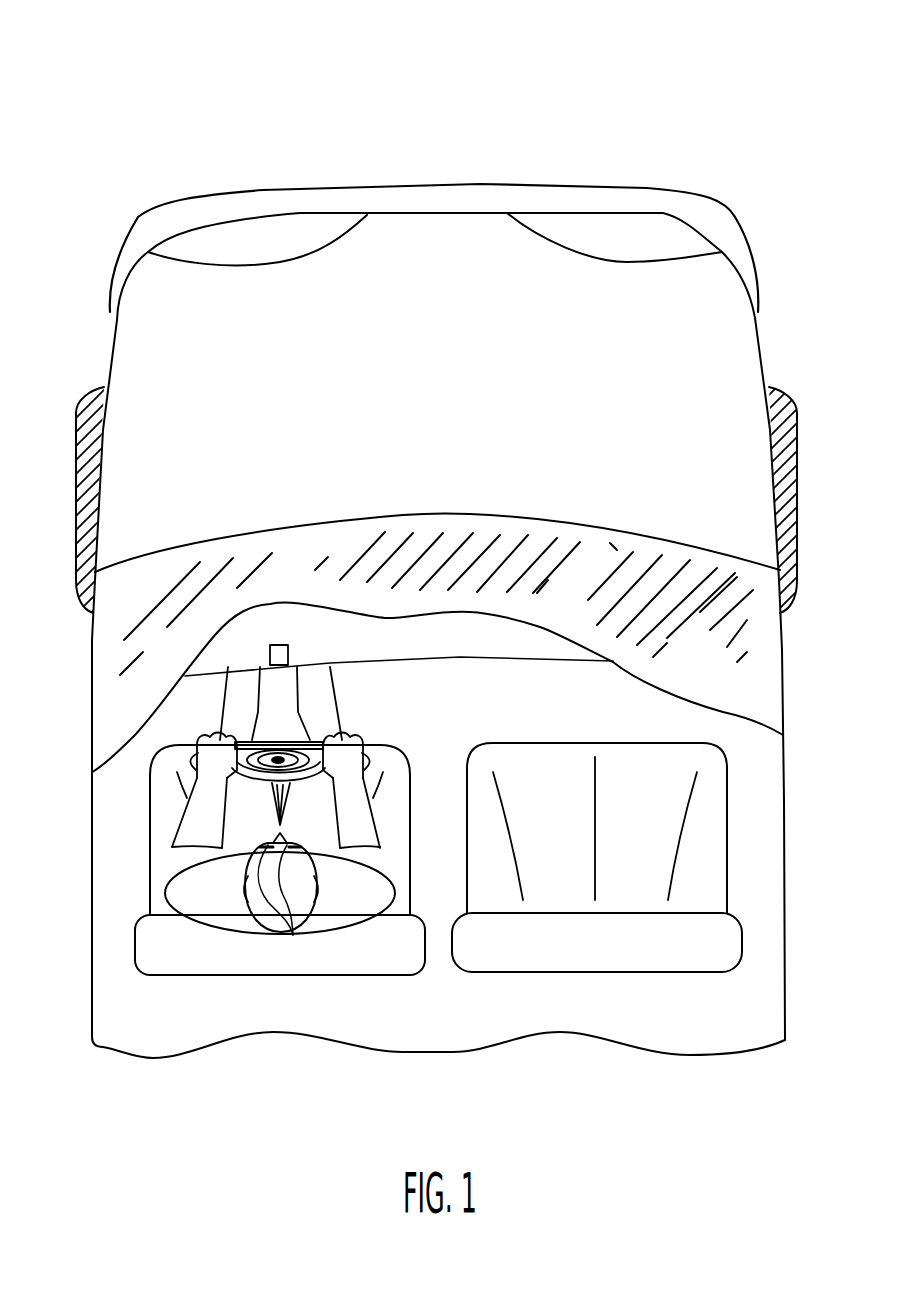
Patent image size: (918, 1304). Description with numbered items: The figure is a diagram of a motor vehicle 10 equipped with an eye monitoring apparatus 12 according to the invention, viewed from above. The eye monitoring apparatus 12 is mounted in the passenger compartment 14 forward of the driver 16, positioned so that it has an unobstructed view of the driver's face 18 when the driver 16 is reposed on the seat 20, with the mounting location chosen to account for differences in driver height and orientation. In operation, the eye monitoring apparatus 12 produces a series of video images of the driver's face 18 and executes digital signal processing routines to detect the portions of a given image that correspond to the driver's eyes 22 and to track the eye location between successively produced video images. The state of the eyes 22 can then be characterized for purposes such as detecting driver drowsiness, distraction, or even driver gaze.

The motor vehicle 10 is at (153, 118).
The eye monitoring apparatus 12 is at (270, 645).
The passenger compartment 14 is at (458, 1025).
The driver 16 is at (208, 915).
The driver's face 18 is at (310, 866).
The seat 20 is at (163, 817).
The driver's eyes 22 is at (293, 935).